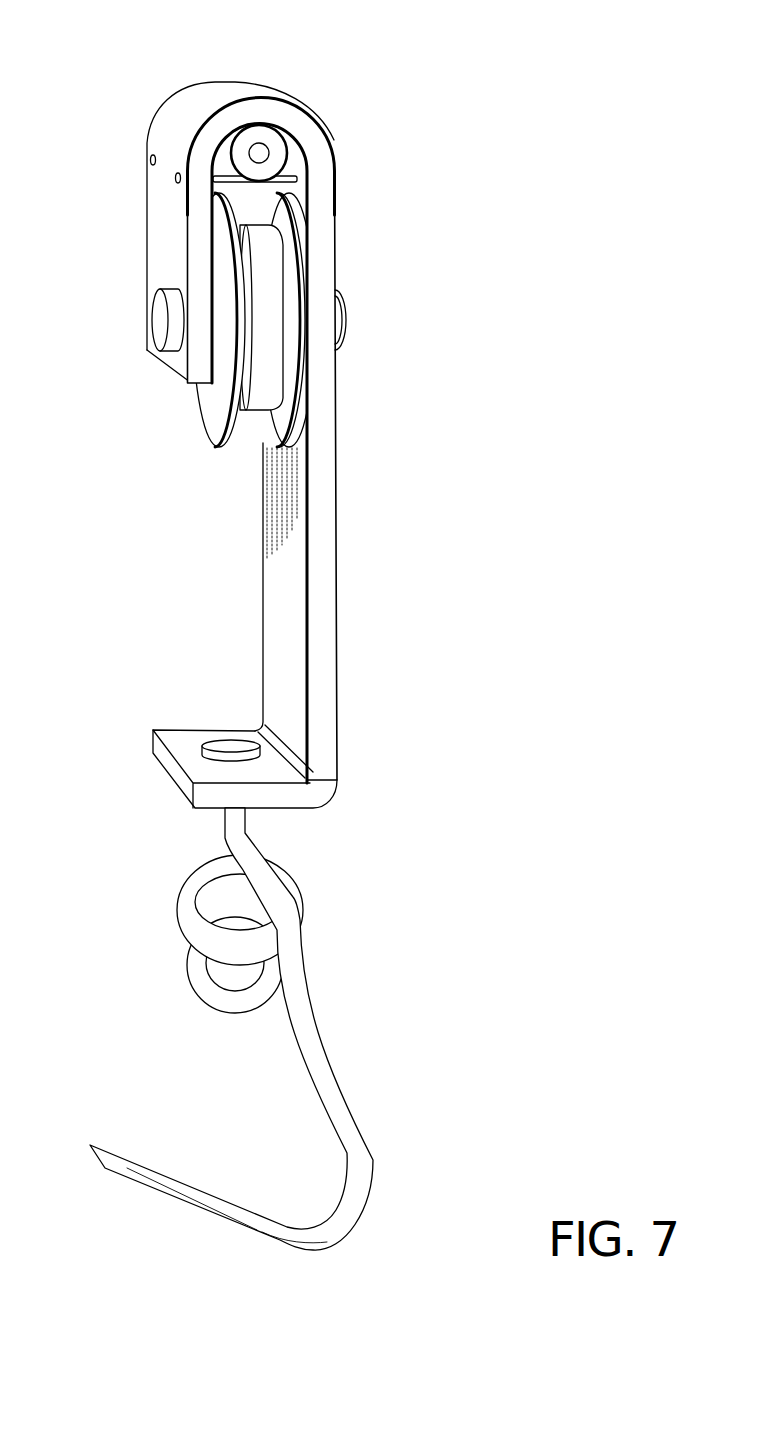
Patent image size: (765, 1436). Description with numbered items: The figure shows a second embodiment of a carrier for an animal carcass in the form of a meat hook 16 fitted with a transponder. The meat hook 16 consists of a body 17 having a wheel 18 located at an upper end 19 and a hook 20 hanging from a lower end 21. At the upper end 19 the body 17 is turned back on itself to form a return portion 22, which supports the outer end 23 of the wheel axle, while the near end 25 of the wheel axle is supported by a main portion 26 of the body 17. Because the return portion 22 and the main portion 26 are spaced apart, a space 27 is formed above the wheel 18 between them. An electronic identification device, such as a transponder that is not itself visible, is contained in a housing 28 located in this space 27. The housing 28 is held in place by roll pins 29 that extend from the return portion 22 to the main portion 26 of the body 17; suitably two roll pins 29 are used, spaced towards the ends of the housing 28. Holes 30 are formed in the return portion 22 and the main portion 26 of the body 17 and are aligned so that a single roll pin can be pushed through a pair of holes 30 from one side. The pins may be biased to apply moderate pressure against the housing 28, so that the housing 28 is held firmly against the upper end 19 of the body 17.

The meat hook 16 is at (337, 262).
The body 17 is at (308, 393).
The wheel 18 is at (208, 425).
The upper end 19 is at (255, 100).
The hook 20 is at (362, 1134).
The lower end 21 is at (327, 752).
The return portion 22 is at (162, 232).
The outer end 23 is at (163, 323).
The near end 25 is at (345, 319).
The main portion 26 is at (322, 230).
The space 27 is at (215, 157).
The housing 28 is at (284, 157).
The roll pins 29 is at (300, 187).
The holes 30 is at (177, 176).